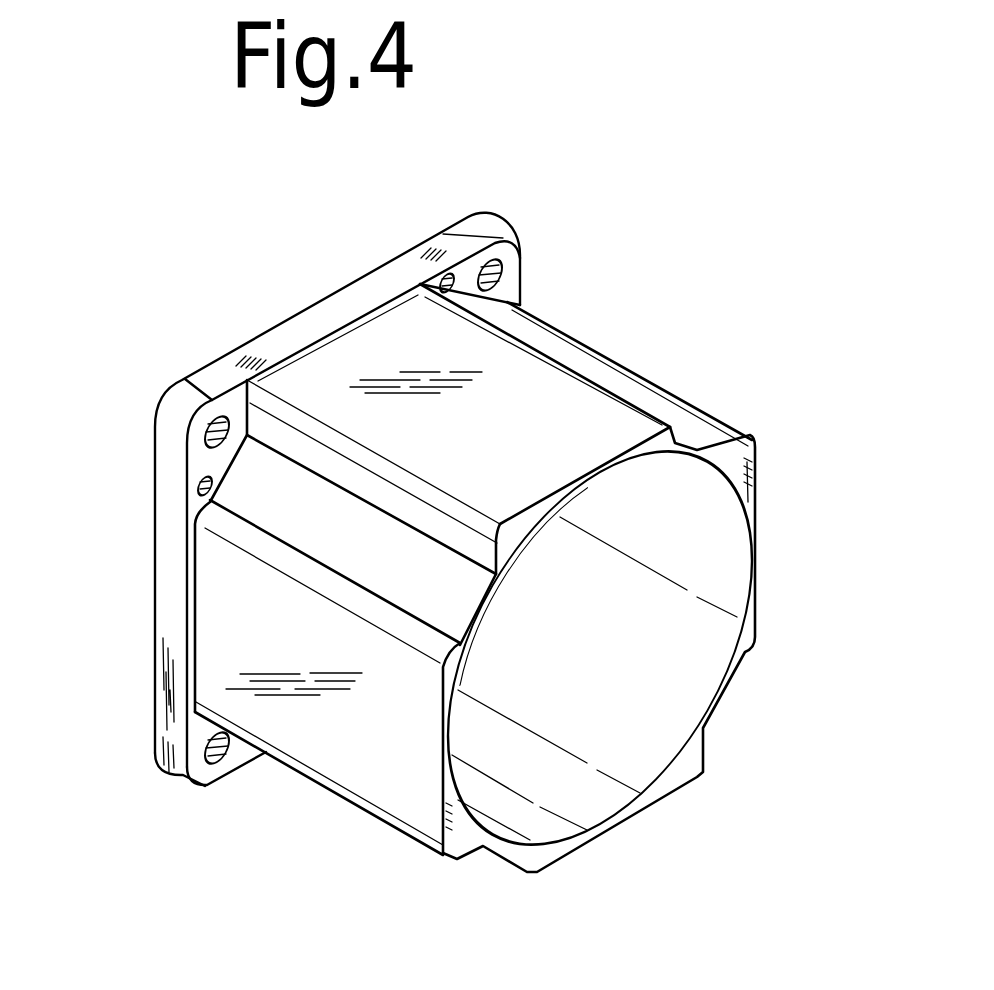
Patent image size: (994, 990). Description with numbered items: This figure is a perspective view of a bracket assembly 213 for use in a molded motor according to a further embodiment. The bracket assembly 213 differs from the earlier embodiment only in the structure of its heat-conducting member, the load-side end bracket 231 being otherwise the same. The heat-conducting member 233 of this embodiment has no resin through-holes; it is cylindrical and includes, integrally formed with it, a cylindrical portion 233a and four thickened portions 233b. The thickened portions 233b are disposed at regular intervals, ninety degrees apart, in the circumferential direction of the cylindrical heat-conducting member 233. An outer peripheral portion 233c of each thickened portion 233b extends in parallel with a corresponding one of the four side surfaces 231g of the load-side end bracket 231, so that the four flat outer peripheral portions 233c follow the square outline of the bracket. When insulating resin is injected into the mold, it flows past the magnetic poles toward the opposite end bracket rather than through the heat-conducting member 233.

The bracket assembly 213 is at (459, 544).
The load-side end bracket 231 is at (285, 333).
The side surfaces 231g is at (382, 275).
The heat-conducting member 233 is at (547, 407).
The cylindrical portion 233a is at (697, 450).
The thickened portions 233b is at (600, 423).
The outer peripheral portion 233c is at (508, 392).